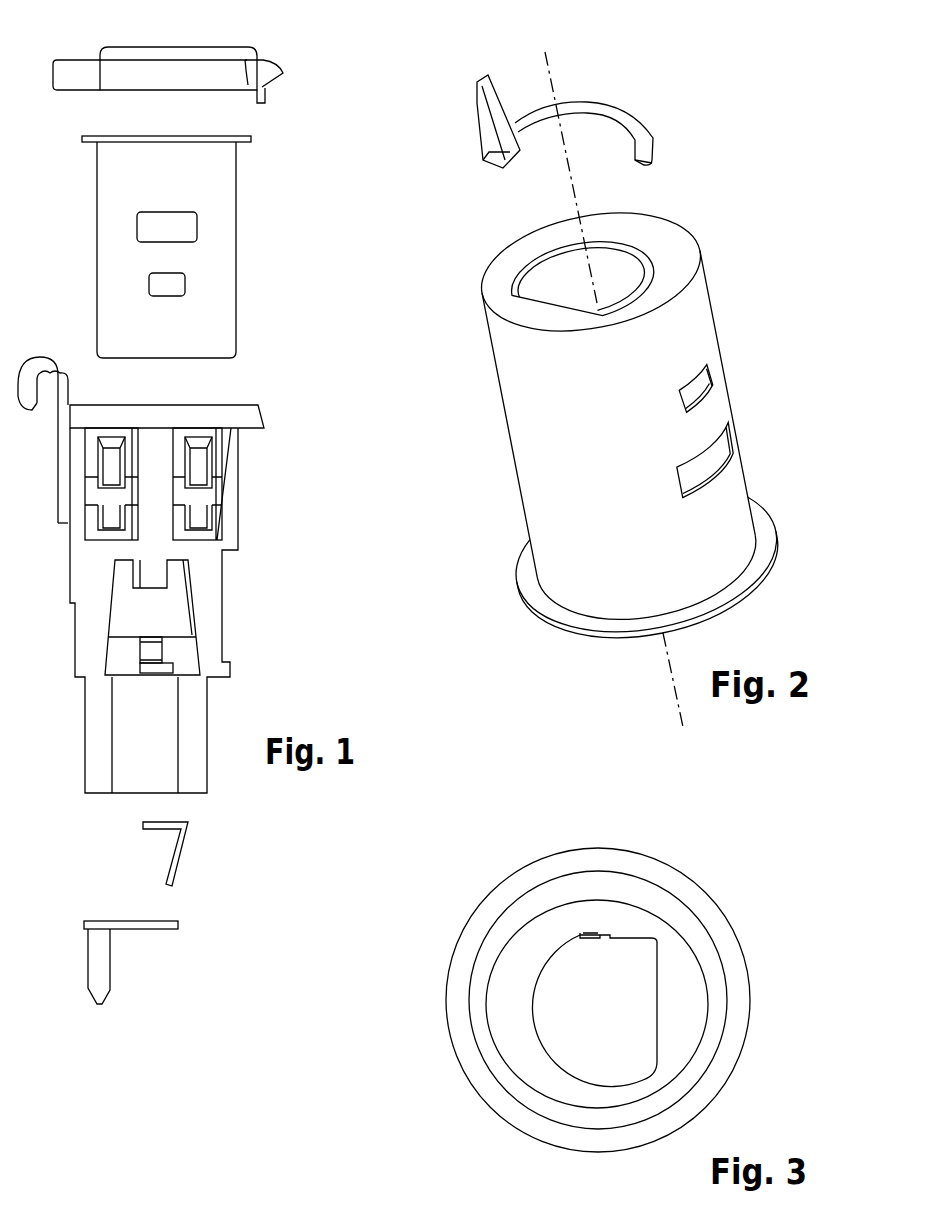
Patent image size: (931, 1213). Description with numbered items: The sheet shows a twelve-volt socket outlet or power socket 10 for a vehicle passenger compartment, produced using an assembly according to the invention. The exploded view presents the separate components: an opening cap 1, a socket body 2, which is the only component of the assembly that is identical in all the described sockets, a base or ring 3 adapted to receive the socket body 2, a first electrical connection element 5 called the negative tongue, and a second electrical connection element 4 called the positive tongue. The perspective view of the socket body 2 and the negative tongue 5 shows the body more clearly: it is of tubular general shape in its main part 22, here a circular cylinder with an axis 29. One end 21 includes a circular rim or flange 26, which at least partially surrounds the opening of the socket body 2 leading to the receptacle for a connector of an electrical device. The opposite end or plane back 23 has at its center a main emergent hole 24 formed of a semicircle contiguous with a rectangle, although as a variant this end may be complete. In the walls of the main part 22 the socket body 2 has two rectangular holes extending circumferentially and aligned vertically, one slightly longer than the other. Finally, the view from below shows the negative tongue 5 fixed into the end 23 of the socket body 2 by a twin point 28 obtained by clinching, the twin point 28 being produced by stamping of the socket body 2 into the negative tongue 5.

In FIG. 1, the opening cap 1 is at (217, 48).
In FIG. 1, the socket body 2 is at (237, 210).
In FIG. 2, the socket body 2 is at (692, 328).
In FIG. 1, the base or ring 3 is at (223, 617).
In FIG. 1, the second electrical connection element (positive tongue) 4 is at (183, 860).
In FIG. 1, the first electrical connection element (negative tongue) 5 is at (110, 972).
In FIG. 2, the first electrical connection element (negative tongue) 5 is at (627, 117).
In FIG. 1, the power socket 10 is at (318, 465).
In FIG. 2, the power socket 10 is at (717, 120).
In FIG. 3, the power socket 10 is at (478, 871).
In FIG. 2, the end 21 is at (715, 614).
In FIG. 2, the main part 22 is at (506, 410).
In FIG. 2, the opposite end or plane back 23 is at (497, 233).
In FIG. 3, the opposite end or plane back 23 is at (460, 1047).
In FIG. 2, the main emergent hole 24 is at (619, 275).
In FIG. 3, the main emergent hole 24 is at (612, 1033).
In FIG. 2, the circular rim or flange 26 is at (768, 532).
In FIG. 3, the twin point 28 is at (500, 1000).
In FIG. 2, the axis 29 is at (548, 68).